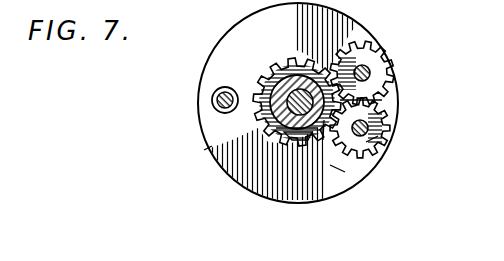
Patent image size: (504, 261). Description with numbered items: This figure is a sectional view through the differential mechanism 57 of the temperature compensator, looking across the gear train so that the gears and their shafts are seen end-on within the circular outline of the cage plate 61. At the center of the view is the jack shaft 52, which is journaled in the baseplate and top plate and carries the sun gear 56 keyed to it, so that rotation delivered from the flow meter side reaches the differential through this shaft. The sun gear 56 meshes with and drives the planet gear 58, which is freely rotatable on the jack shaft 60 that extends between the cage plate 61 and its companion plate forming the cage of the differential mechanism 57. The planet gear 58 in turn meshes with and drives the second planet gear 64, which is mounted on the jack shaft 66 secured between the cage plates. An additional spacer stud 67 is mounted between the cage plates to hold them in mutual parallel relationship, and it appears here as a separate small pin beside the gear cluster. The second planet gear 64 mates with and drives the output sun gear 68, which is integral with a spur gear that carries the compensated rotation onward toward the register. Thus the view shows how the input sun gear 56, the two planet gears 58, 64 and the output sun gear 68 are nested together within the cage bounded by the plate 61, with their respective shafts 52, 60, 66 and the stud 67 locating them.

The jack shaft 52 is at (267, 130).
The sun gear 56 is at (323, 145).
The differential mechanism 57 is at (388, 33).
The planet gear 58 is at (392, 123).
The jack shaft 60 is at (373, 143).
The cage plate 61 is at (337, 170).
The second planet gear 64 is at (393, 95).
The jack shaft 66 is at (370, 72).
The spacer stud 67 is at (215, 110).
The output sun gear 68 is at (258, 77).